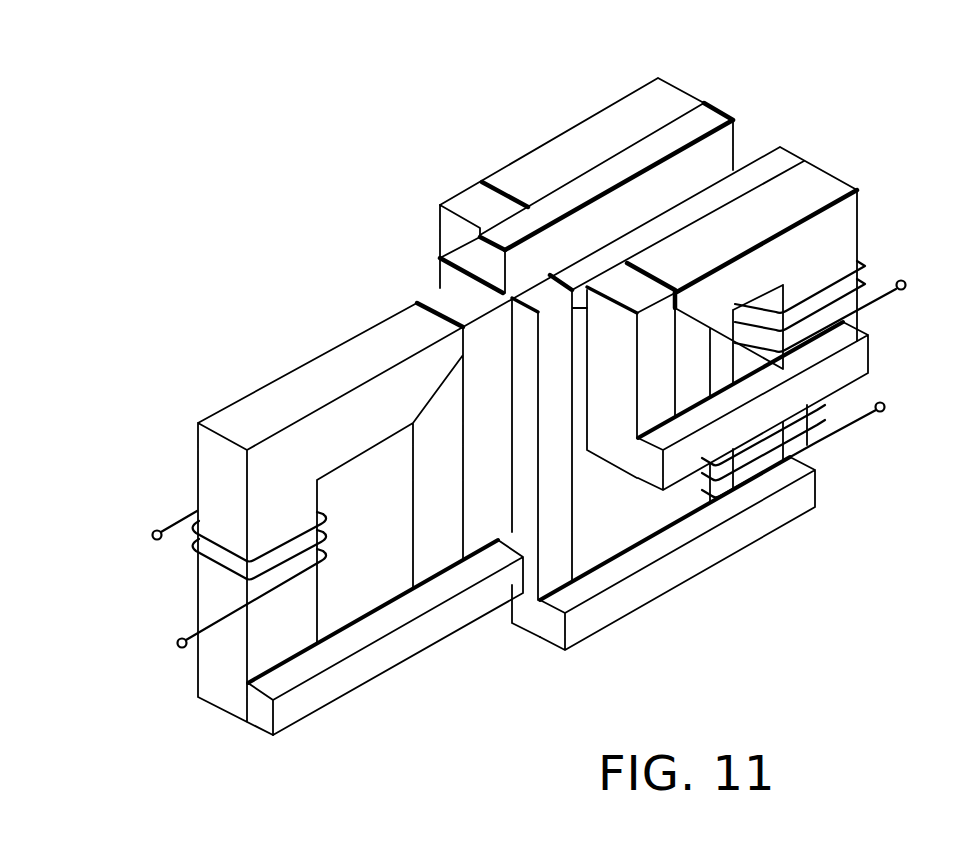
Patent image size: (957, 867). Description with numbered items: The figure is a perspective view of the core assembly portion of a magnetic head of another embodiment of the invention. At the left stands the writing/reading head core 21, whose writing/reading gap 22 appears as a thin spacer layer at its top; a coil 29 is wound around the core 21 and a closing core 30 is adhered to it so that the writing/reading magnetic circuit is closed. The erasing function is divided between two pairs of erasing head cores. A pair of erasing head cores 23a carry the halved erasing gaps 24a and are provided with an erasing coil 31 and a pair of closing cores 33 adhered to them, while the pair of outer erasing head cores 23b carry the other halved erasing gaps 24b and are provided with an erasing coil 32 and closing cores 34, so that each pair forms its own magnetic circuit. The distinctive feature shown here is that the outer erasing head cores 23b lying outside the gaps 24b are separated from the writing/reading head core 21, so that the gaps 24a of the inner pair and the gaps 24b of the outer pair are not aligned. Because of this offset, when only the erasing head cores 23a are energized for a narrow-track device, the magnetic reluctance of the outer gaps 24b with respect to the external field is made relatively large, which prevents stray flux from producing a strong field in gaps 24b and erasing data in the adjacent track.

The writing/reading head core 21 is at (298, 383).
The writing/reading gap 22 is at (393, 317).
The erasing head core 23a is at (792, 146).
The erasing head core 23b is at (590, 117).
The erasing gap 24a is at (512, 308).
The erasing gap 24b is at (655, 260).
The coil 29 is at (157, 541).
The closing core 30 is at (378, 676).
The erasing coil 31 is at (866, 420).
The erasing coil 32 is at (888, 302).
The closing core 33 is at (717, 563).
The closing core 34 is at (870, 353).